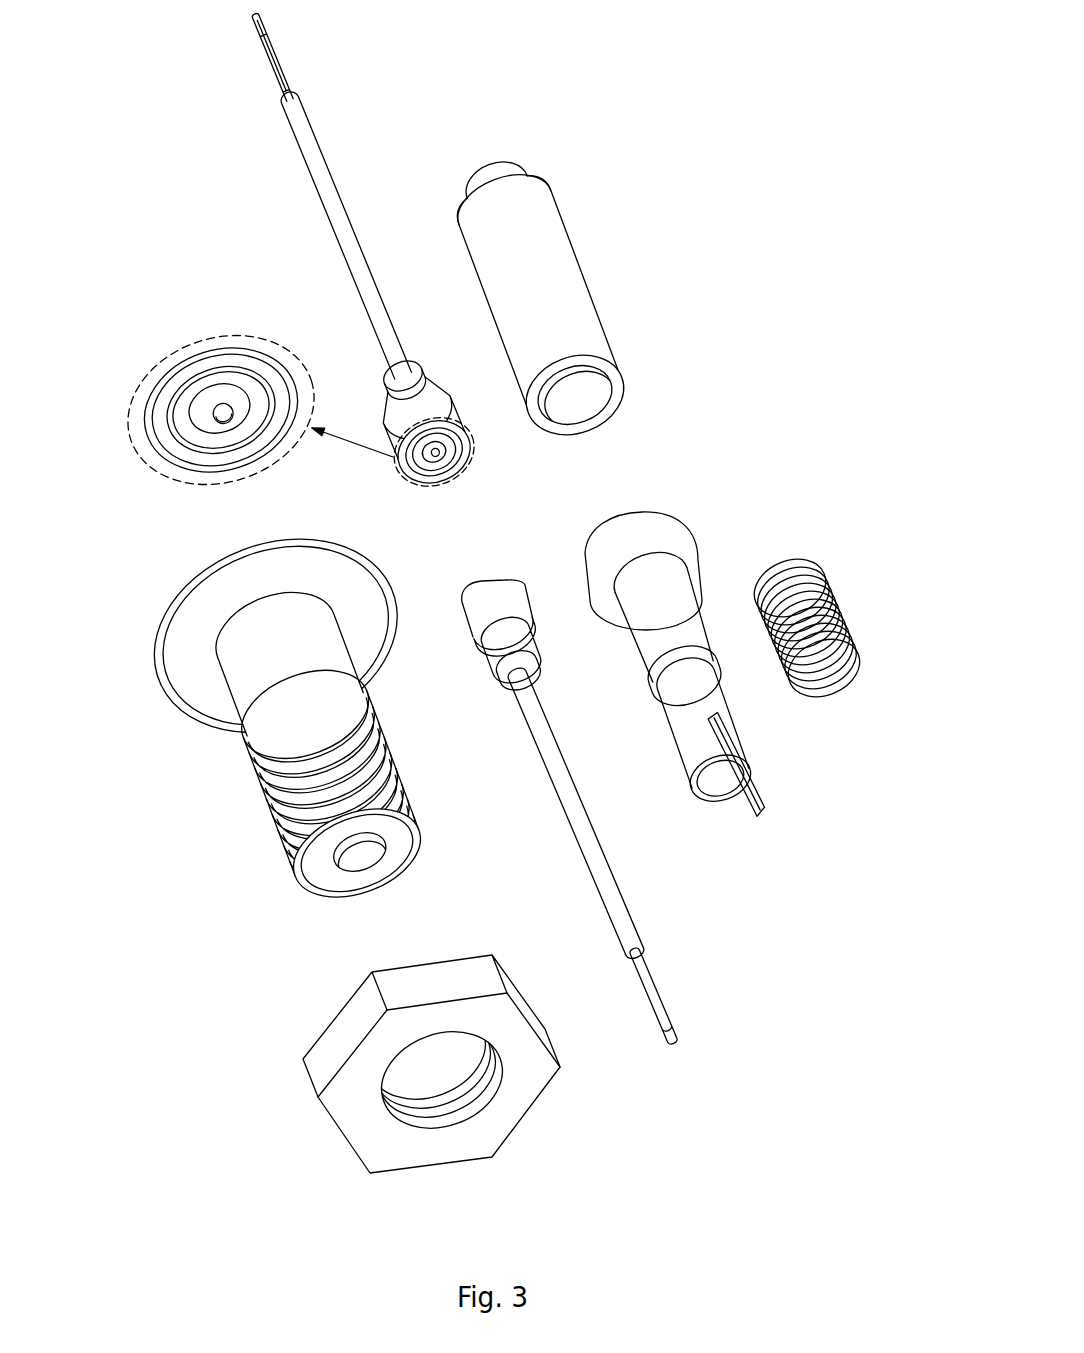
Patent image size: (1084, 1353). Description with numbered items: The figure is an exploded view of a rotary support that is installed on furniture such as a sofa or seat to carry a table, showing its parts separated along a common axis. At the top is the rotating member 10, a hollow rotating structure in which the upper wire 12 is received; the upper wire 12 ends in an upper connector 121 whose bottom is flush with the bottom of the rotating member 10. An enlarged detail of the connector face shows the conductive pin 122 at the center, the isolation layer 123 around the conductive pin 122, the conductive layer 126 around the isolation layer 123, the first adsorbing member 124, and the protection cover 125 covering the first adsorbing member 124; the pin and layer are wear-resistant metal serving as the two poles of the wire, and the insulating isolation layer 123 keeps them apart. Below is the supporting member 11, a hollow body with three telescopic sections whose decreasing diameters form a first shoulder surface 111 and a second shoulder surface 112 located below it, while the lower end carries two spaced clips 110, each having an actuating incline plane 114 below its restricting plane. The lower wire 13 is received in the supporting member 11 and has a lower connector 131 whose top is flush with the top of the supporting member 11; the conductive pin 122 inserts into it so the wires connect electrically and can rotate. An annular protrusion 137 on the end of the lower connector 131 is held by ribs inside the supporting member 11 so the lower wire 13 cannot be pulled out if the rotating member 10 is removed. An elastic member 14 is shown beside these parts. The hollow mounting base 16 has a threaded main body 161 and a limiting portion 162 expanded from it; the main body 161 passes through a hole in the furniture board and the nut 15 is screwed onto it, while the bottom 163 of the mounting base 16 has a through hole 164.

The rotating member 10 is at (562, 292).
The supporting member 11 is at (700, 675).
The clip 110 is at (740, 750).
The first shoulder surface 111 is at (670, 562).
The second shoulder surface 112 is at (660, 693).
The actuating incline plane 114 is at (695, 790).
The upper wire 12 is at (310, 160).
The upper connector 121 is at (430, 412).
The conductive pin 122 is at (223, 417).
The isolation layer 123 is at (210, 400).
The first adsorbing member 124 is at (160, 417).
The protection cover 125 is at (243, 350).
The conductive layer 126 is at (188, 433).
The lower wire 13 is at (612, 900).
The lower connector 131 is at (492, 590).
The annular protrusion 137 is at (505, 685).
The elastic member 14 is at (847, 625).
The nut 15 is at (528, 1083).
The mounting base 16 is at (297, 717).
The main body 161 is at (327, 665).
The limiting portion 162 is at (187, 627).
The bottom 163 is at (405, 843).
The through hole 164 is at (343, 868).